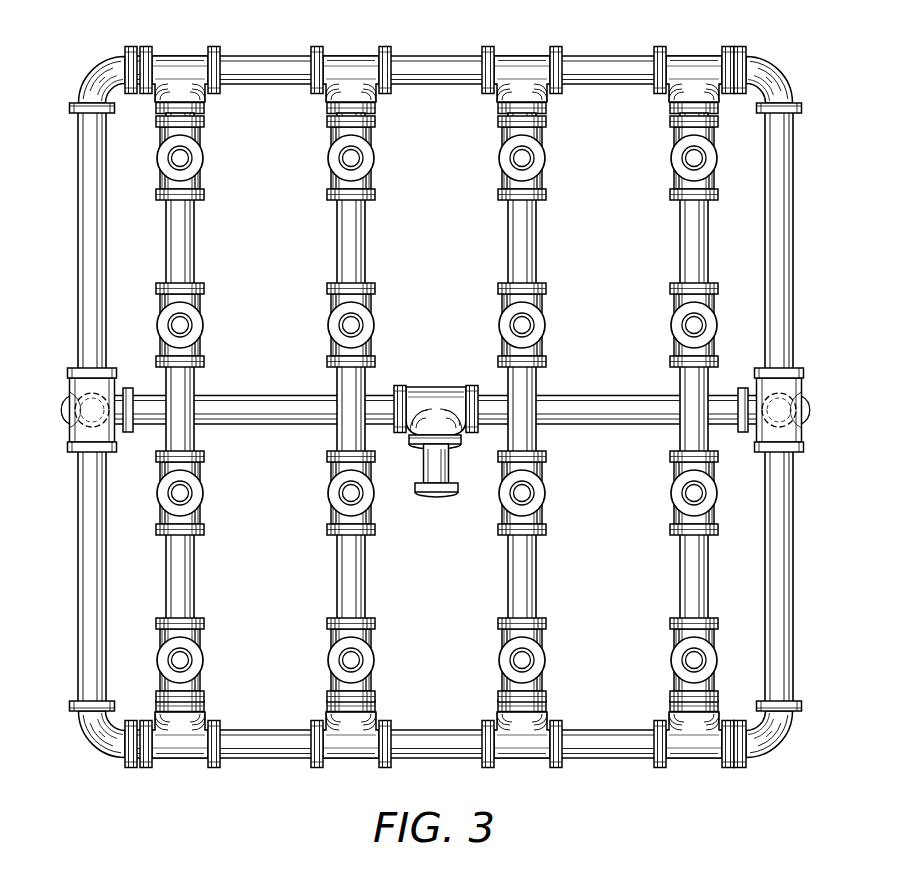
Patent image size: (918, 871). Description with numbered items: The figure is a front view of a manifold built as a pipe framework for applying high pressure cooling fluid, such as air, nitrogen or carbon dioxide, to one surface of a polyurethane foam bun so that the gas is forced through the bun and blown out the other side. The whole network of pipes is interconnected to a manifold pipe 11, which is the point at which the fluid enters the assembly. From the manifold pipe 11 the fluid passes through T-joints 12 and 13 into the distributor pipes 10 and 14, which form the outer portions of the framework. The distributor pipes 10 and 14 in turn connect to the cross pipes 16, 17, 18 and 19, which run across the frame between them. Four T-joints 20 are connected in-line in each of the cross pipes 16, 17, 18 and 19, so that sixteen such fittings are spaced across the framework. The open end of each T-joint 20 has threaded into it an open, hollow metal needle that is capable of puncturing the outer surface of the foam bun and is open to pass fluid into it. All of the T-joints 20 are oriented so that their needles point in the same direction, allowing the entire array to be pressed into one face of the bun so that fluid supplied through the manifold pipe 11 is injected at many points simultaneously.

The distributor pipe 10 is at (787, 194).
The manifold pipe 11 is at (430, 467).
The T-joint 12 is at (797, 390).
The T-joint 13 is at (70, 430).
The distributor pipe 14 is at (437, 67).
The cross pipe 16 is at (355, 577).
The cross pipe 17 is at (528, 578).
The cross pipe 18 is at (692, 582).
The cross pipe 19 is at (188, 574).
The T-joint 20 is at (327, 183).